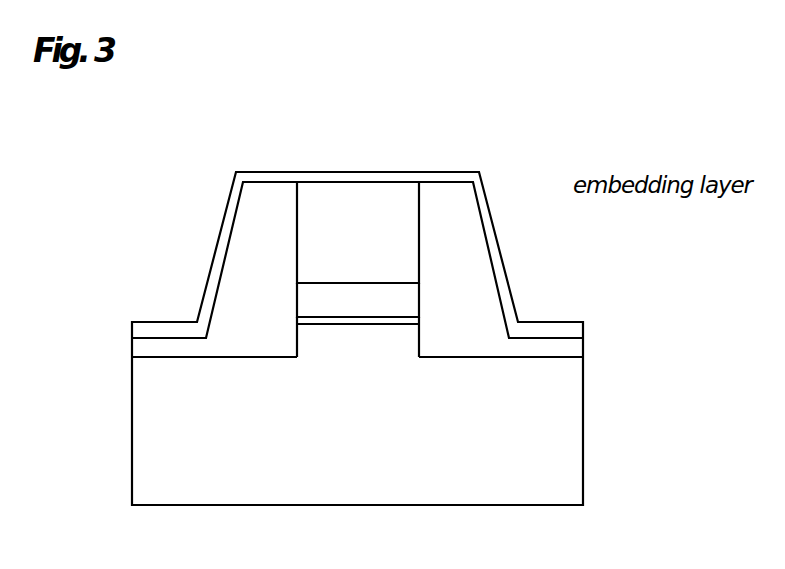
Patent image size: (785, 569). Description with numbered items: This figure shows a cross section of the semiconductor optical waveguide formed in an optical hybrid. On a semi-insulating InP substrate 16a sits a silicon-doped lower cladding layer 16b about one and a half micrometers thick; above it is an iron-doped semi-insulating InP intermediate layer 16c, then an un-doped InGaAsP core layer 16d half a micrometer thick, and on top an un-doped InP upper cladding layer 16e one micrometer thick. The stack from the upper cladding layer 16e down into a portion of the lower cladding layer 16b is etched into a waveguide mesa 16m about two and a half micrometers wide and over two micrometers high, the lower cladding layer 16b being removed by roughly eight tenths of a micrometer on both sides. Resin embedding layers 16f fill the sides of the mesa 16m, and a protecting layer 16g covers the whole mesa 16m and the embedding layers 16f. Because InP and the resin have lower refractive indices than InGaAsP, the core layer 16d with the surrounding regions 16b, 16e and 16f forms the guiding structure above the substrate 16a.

The substrate 16a is at (577, 468).
The lower cladding layer 16b is at (310, 343).
The intermediate layer 16c is at (330, 317).
The core layer 16d is at (345, 287).
The upper cladding layer 16e is at (365, 232).
The embedding layer 16f is at (237, 240).
The protecting layer 16g is at (503, 275).
The waveguide mesa 16m is at (390, 400).